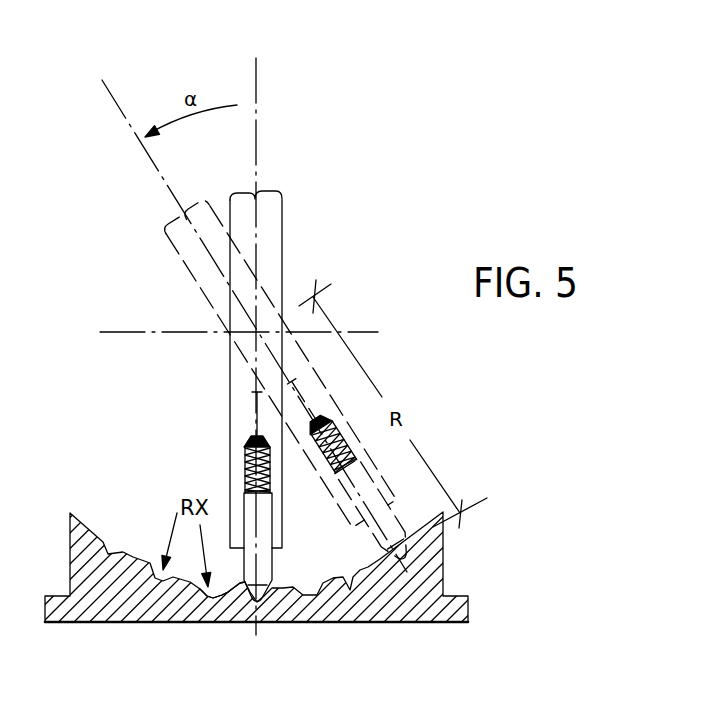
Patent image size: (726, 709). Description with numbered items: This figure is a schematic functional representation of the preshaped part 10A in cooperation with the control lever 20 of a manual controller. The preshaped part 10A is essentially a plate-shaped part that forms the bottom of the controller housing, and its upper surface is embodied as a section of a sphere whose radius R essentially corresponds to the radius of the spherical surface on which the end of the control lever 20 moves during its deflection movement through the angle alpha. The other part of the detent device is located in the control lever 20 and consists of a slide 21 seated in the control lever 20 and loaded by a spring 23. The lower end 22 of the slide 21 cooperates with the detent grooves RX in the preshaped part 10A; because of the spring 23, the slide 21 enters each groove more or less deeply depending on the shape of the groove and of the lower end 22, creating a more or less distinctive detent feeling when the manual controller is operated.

The control lever 20 is at (273, 251).
The slide 21 is at (252, 503).
The spring 23 is at (243, 442).
The lower end 22 is at (243, 577).
The preshaped part 10A is at (423, 558).